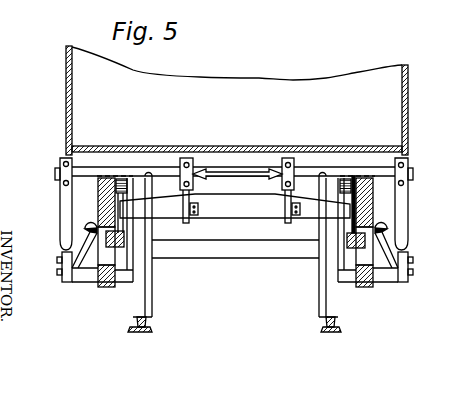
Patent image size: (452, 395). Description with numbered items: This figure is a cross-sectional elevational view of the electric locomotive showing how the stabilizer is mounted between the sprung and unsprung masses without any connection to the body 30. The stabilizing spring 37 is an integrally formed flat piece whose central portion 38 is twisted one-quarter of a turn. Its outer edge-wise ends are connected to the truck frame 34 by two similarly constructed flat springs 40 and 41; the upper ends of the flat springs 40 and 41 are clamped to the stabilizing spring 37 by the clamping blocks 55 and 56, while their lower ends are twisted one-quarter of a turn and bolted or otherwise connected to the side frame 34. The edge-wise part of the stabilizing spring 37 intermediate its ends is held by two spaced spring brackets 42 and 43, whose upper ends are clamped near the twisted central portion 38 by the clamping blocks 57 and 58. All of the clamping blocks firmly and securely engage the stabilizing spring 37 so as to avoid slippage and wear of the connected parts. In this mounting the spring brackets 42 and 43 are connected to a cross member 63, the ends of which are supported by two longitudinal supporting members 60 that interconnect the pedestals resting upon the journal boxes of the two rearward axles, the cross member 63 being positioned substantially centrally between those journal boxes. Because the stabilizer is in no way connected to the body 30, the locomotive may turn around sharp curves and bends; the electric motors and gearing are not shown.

The body 30 is at (248, 111).
The truck frame 34 is at (108, 287).
The stabilizing spring 37 is at (133, 172).
The central portion 38 is at (238, 172).
The flat spring 40 is at (60, 207).
The flat spring 41 is at (408, 209).
The spring bracket 42 is at (189, 198).
The spring bracket 43 is at (285, 200).
The clamping block 55 is at (72, 169).
The clamping block 56 is at (408, 166).
The clamping block 57 is at (193, 168).
The clamping block 58 is at (295, 168).
The longitudinal supporting member 60 is at (133, 209).
The cross member 63 is at (228, 208).